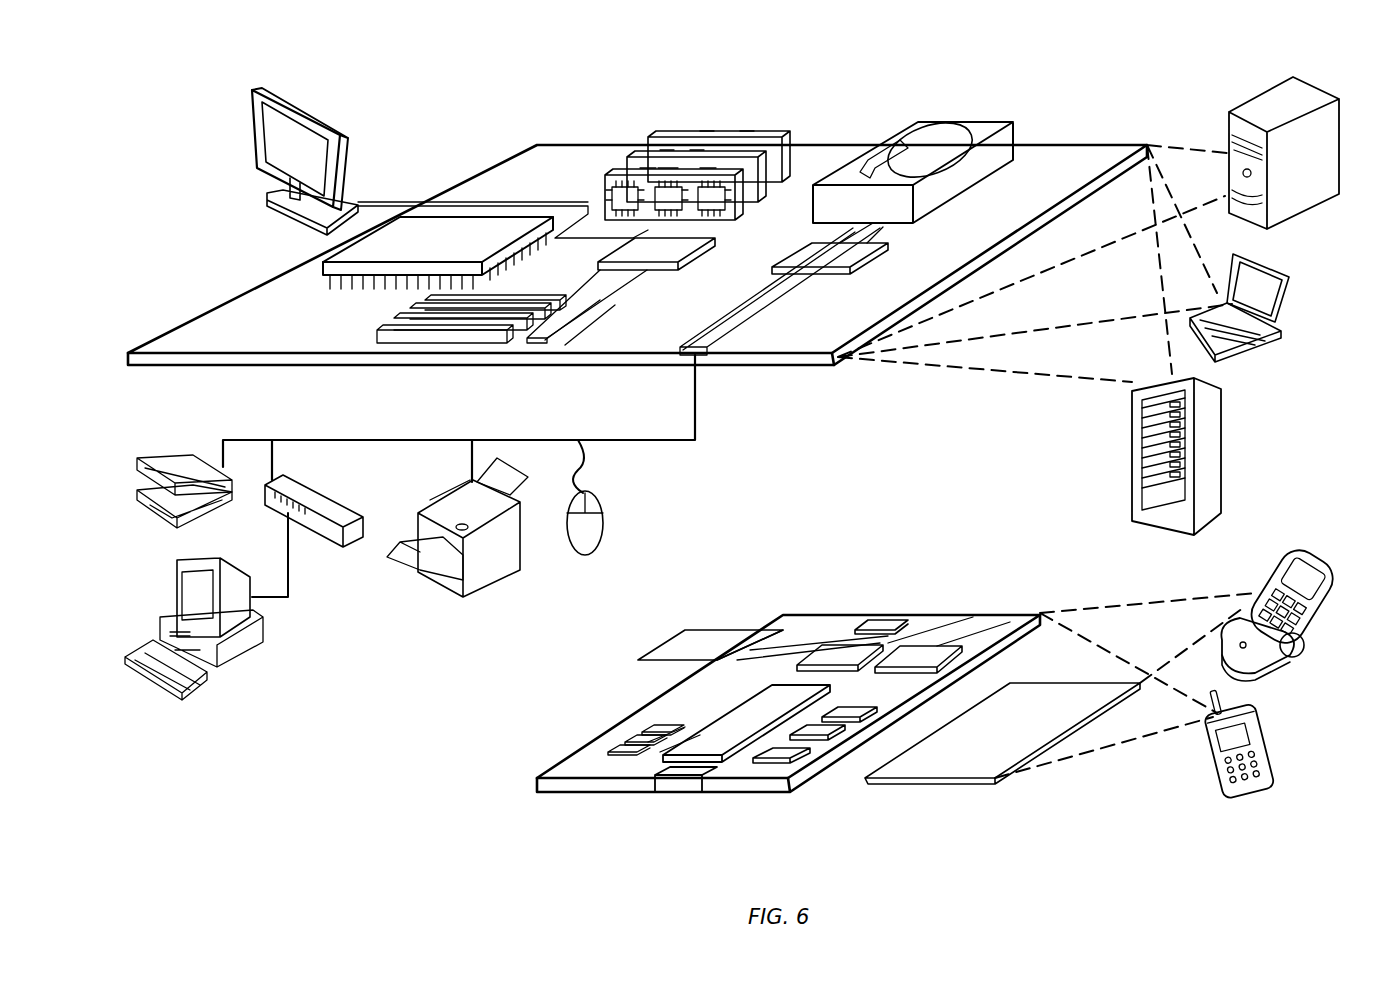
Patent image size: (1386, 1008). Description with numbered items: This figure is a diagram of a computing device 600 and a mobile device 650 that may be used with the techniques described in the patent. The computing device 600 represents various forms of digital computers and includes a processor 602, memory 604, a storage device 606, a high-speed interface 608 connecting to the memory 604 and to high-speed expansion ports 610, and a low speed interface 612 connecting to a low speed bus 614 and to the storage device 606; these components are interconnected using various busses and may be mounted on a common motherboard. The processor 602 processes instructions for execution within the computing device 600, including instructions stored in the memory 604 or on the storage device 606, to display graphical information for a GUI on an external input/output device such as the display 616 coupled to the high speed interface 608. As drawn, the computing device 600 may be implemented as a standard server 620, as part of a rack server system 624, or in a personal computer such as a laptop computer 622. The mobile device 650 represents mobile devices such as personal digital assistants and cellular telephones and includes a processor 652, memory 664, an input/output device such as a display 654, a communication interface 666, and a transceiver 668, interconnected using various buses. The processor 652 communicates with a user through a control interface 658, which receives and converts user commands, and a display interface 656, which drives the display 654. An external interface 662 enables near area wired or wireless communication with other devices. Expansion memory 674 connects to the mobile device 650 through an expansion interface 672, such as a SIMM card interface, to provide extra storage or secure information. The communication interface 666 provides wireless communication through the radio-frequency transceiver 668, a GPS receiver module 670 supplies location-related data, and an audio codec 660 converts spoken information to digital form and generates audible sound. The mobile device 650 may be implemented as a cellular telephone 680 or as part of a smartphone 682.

The computing device 600 is at (449, 112).
The processor 602 is at (330, 267).
The memory 604 is at (660, 140).
The storage device 606 is at (898, 122).
The high-speed interface 608 is at (650, 255).
The high-speed expansion ports 610 is at (383, 323).
The low speed interface 612 is at (812, 258).
The low speed bus 614 is at (703, 356).
The display 616 is at (252, 92).
The standard server 620 is at (1229, 130).
The laptop computer 622 is at (1289, 278).
The rack server system 624 is at (1132, 482).
The mobile device 650 is at (514, 787).
The processor 652 is at (717, 755).
The display 654 is at (962, 768).
The display interface 656 is at (795, 755).
The control interface 658 is at (822, 733).
The audio codec 660 is at (848, 712).
The external interface 662 is at (683, 782).
The memory 664 is at (640, 742).
The communication interface 666 is at (840, 652).
The transceiver 668 is at (920, 655).
The GPS receiver module 670 is at (890, 622).
The expansion interface 672 is at (767, 630).
The expansion memory 674 is at (687, 628).
The cellular telephone 680 is at (1274, 580).
The smartphone 682 is at (1215, 752).